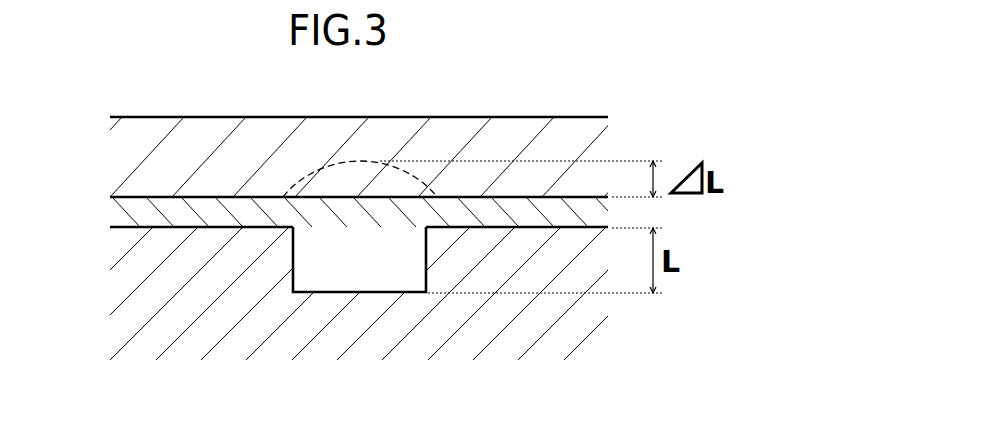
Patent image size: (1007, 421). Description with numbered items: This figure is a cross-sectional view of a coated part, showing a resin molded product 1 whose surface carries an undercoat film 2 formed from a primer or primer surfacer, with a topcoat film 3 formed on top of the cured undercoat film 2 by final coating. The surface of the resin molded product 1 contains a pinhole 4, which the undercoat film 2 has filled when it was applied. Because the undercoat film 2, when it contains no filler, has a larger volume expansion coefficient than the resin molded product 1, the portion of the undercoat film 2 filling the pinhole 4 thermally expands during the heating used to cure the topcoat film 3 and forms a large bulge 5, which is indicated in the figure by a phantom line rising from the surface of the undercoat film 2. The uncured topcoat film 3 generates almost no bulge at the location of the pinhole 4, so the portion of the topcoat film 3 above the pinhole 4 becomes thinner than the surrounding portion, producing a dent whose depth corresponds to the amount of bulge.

The resin molded product 1 is at (120, 297).
The undercoat film 2 is at (120, 216).
The topcoat film 3 is at (120, 163).
The pinhole 4 is at (349, 292).
The bulge 5 is at (338, 161).